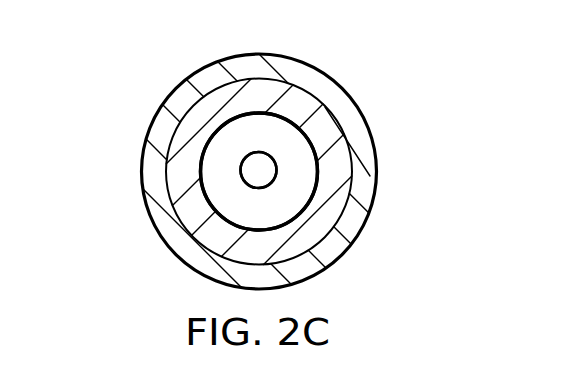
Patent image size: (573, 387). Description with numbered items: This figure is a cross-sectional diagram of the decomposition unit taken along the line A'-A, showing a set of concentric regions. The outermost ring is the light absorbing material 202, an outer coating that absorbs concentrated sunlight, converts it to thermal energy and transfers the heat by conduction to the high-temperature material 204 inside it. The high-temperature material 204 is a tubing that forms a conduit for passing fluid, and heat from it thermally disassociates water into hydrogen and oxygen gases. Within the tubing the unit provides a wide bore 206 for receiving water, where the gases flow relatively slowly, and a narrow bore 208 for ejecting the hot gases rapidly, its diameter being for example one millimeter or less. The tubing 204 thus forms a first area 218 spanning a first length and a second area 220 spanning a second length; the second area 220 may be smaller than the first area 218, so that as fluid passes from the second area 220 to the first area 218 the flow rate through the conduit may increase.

The light absorbing material 202 is at (253, 146).
The high-temperature material 204 is at (180, 173).
The wide bore 206 is at (293, 197).
The narrow bore 208 is at (267, 150).
The first area 218 is at (237, 207).
The second area 220 is at (251, 167).